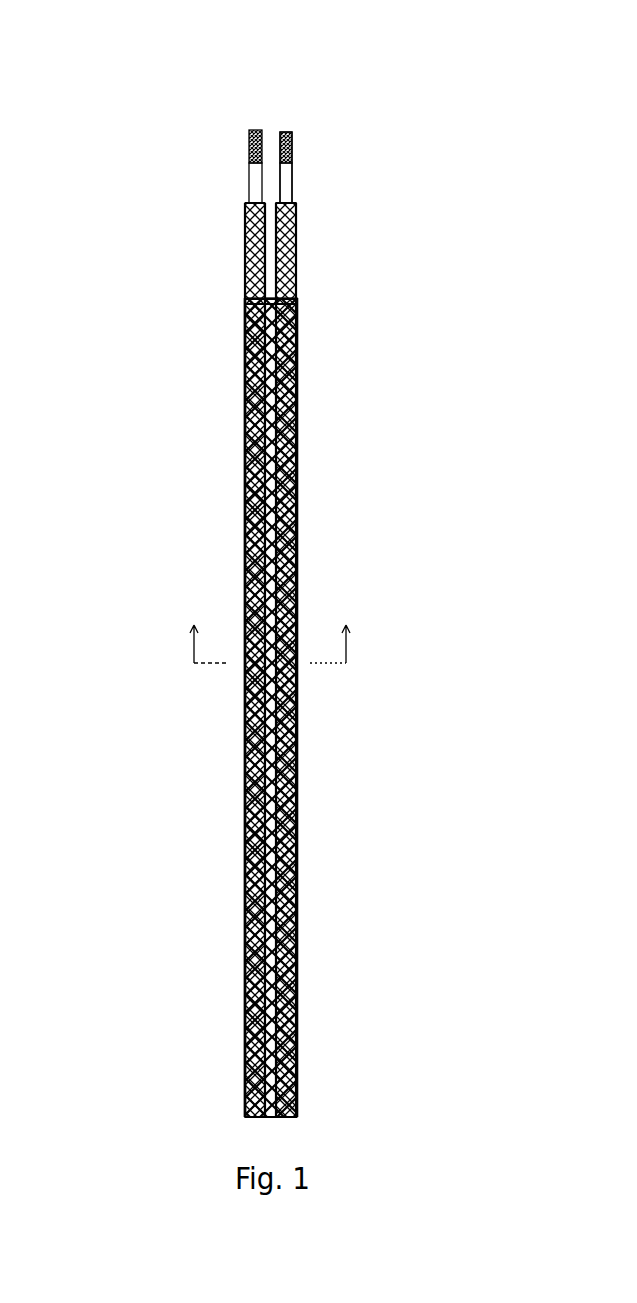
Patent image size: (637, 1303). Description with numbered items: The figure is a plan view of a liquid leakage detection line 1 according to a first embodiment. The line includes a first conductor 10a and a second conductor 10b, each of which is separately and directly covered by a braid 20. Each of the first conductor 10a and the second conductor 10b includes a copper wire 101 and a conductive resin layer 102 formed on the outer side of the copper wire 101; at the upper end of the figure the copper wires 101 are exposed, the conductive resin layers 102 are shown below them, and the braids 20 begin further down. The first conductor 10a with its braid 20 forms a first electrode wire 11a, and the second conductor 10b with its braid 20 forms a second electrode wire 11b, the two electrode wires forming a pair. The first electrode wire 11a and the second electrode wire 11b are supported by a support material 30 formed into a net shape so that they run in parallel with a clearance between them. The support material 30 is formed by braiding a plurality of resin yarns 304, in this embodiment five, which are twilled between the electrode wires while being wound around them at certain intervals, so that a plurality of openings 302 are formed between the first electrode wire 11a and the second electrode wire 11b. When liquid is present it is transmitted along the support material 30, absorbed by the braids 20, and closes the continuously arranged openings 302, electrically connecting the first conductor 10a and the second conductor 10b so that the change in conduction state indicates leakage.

The liquid leakage detection line 1 is at (271, 103).
The first conductor 10a is at (165, 123).
The second conductor 10b is at (373, 123).
The first electrode wire 11a is at (105, 148).
The second electrode wire 11b is at (435, 147).
The copper wire 101 is at (248, 145).
The conductive resin layer 102 is at (248, 180).
The braid 20 is at (245, 250).
The support material 30 is at (393, 293).
The openings 302 is at (298, 340).
The resin yarns 304 is at (298, 305).